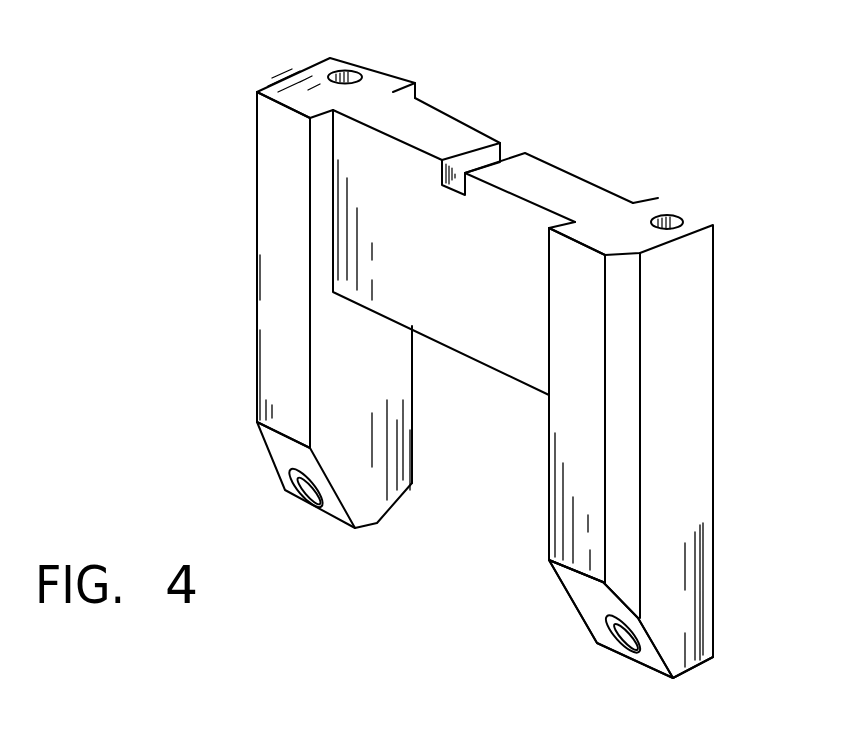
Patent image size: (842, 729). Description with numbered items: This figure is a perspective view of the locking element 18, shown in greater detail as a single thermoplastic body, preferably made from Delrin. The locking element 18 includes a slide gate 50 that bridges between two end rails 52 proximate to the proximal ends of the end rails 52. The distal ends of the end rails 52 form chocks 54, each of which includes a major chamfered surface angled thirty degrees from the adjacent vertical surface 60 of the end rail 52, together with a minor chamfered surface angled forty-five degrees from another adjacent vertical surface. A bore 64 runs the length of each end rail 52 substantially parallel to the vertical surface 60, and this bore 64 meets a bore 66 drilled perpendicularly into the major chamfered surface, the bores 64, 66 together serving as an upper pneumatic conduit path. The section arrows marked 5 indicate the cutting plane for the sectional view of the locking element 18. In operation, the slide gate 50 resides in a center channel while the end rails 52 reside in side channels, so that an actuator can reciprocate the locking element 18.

The locking element 18 is at (630, 110).
The slide gate 50 is at (452, 126).
The end rails 52 is at (257, 130).
The chocks 54 is at (703, 657).
The vertical surface 60 is at (267, 205).
The bore 64 is at (360, 73).
The bore 66 is at (312, 500).
The section line 5- 5 is at (575, 253).